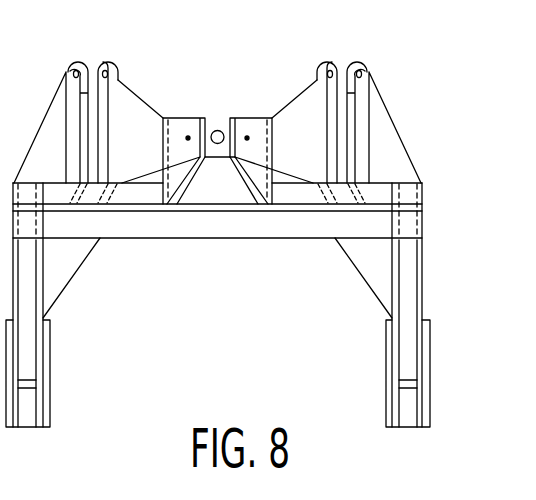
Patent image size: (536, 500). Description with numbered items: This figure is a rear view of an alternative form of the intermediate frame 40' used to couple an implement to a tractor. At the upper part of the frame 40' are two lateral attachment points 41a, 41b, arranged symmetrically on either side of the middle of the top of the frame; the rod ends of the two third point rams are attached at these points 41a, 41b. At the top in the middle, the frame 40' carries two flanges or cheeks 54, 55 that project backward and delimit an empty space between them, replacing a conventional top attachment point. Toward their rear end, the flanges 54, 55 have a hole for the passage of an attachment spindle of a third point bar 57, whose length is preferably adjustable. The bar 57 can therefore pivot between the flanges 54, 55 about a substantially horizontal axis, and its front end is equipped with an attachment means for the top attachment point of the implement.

The intermediate frame 40' is at (218, 305).
The lateral attachment point 41a is at (71, 71).
The lateral attachment point 41b is at (362, 73).
The flange 54 is at (251, 128).
The flange 55 is at (184, 128).
The third point bar 57 is at (218, 129).